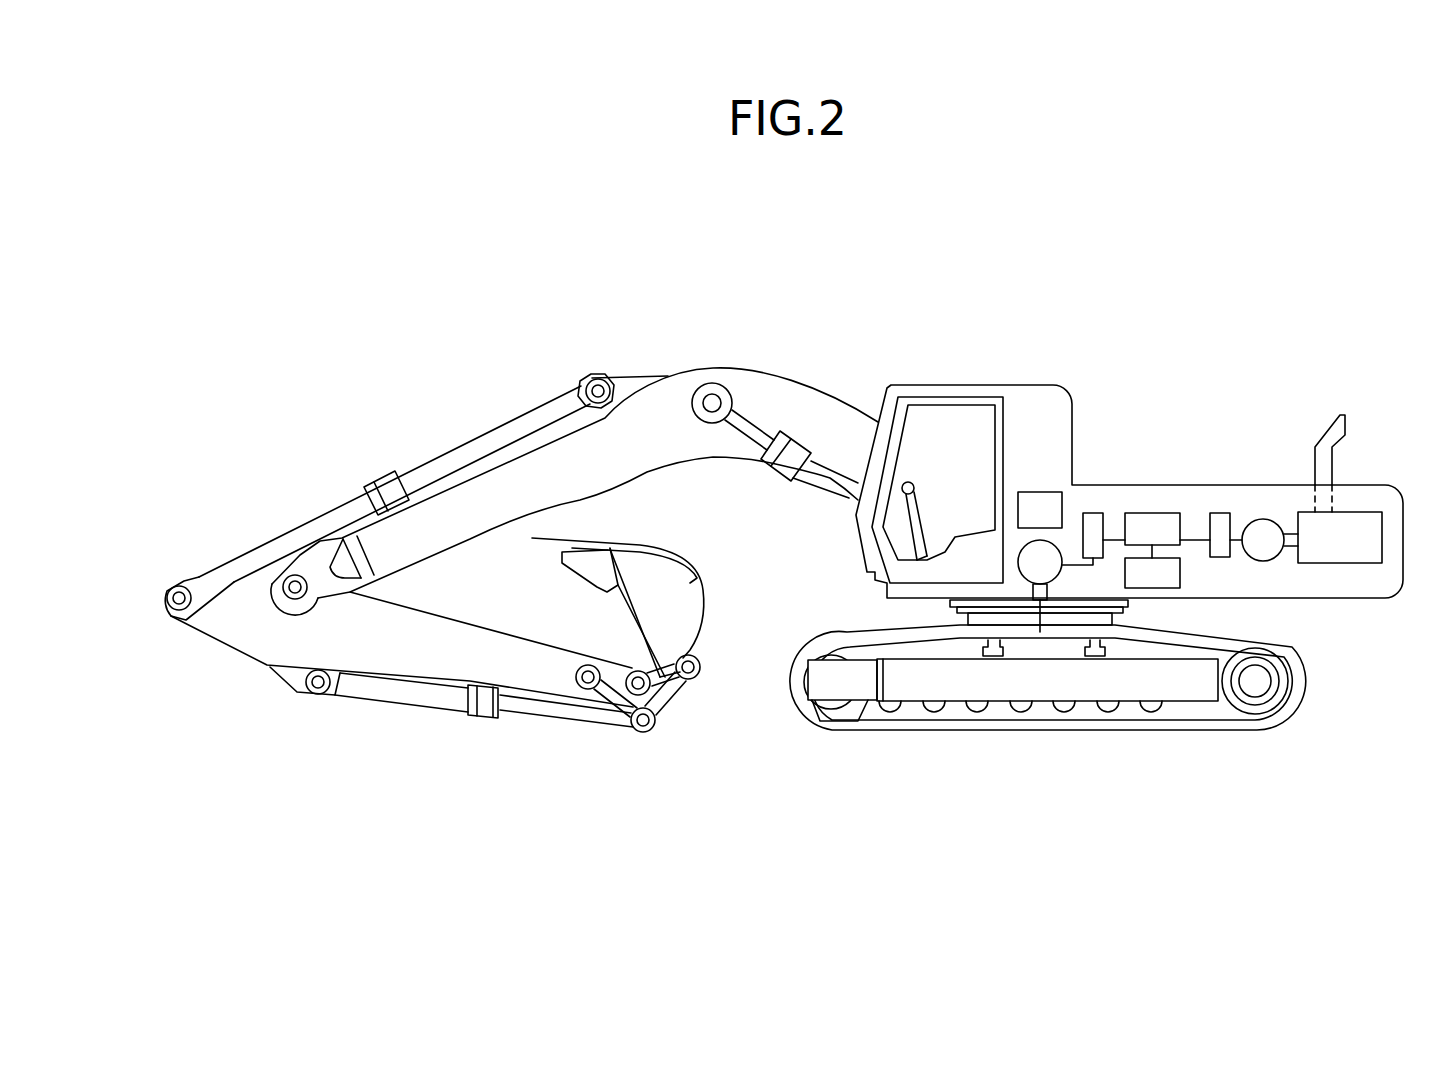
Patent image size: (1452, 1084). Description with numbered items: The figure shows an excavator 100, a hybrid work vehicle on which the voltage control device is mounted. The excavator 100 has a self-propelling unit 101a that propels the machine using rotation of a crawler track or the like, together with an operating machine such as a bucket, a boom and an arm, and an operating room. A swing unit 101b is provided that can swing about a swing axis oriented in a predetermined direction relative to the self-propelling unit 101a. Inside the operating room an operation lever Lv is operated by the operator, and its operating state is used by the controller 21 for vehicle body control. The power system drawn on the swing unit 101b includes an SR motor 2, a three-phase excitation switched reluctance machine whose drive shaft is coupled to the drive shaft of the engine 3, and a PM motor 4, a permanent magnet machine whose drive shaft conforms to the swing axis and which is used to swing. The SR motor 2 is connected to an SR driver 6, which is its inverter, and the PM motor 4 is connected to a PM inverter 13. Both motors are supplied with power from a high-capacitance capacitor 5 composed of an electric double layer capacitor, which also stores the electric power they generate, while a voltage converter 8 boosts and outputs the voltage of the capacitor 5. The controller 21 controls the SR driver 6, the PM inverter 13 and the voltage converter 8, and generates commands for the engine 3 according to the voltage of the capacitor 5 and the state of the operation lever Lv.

The excavator 100 is at (1173, 268).
The self-propelling unit 101a is at (1125, 677).
The swing unit 101b is at (947, 388).
The operation lever Lv is at (910, 483).
The controller 21 is at (1032, 492).
The PM motor 4 is at (1058, 548).
The PM inverter 13 is at (1092, 513).
The voltage converter 8 is at (1135, 513).
The capacitor 5 is at (1155, 589).
The SR driver 6 is at (1217, 513).
The SR motor 2 is at (1278, 560).
The engine 3 is at (1355, 518).